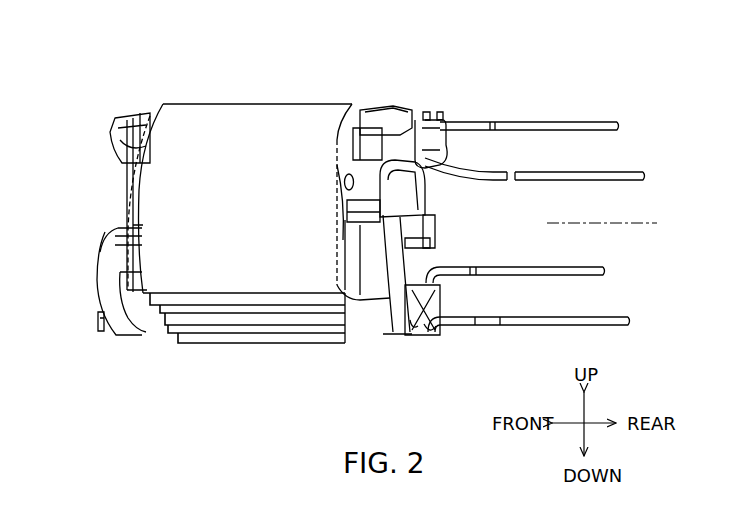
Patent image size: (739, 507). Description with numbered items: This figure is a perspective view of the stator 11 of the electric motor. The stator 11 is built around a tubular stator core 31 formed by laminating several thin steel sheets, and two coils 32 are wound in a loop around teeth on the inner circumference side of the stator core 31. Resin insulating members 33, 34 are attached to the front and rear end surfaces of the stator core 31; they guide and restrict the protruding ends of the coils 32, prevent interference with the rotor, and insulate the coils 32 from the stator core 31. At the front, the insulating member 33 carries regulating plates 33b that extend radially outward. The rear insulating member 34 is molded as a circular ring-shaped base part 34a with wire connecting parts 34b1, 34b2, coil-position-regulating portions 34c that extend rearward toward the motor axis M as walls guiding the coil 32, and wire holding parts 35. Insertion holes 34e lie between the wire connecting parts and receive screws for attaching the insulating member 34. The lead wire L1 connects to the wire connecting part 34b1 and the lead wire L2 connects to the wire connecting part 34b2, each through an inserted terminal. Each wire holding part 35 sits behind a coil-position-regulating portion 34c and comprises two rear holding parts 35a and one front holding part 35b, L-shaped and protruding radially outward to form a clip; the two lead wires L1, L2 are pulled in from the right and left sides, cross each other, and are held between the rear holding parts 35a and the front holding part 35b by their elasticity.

The stator 11 is at (341, 73).
The stator core 31 is at (207, 126).
The coil 32 is at (114, 125).
The insulating member 33 is at (126, 191).
The regulating plate 33b is at (98, 321).
The insulating member 34 is at (345, 145).
The base part 34a is at (337, 165).
The wire connecting part 34b1 is at (432, 240).
The wire connecting part 34b2 is at (366, 140).
The coil-position-regulating portion 34c is at (432, 222).
The insertion hole 34e is at (344, 178).
The wire holding part 35 is at (470, 109).
The rear holding part 35a is at (440, 117).
The front holding part 35b is at (427, 117).
The lead wire L1 is at (565, 122).
The lead wire L2 is at (600, 170).
The motor axis M is at (611, 223).